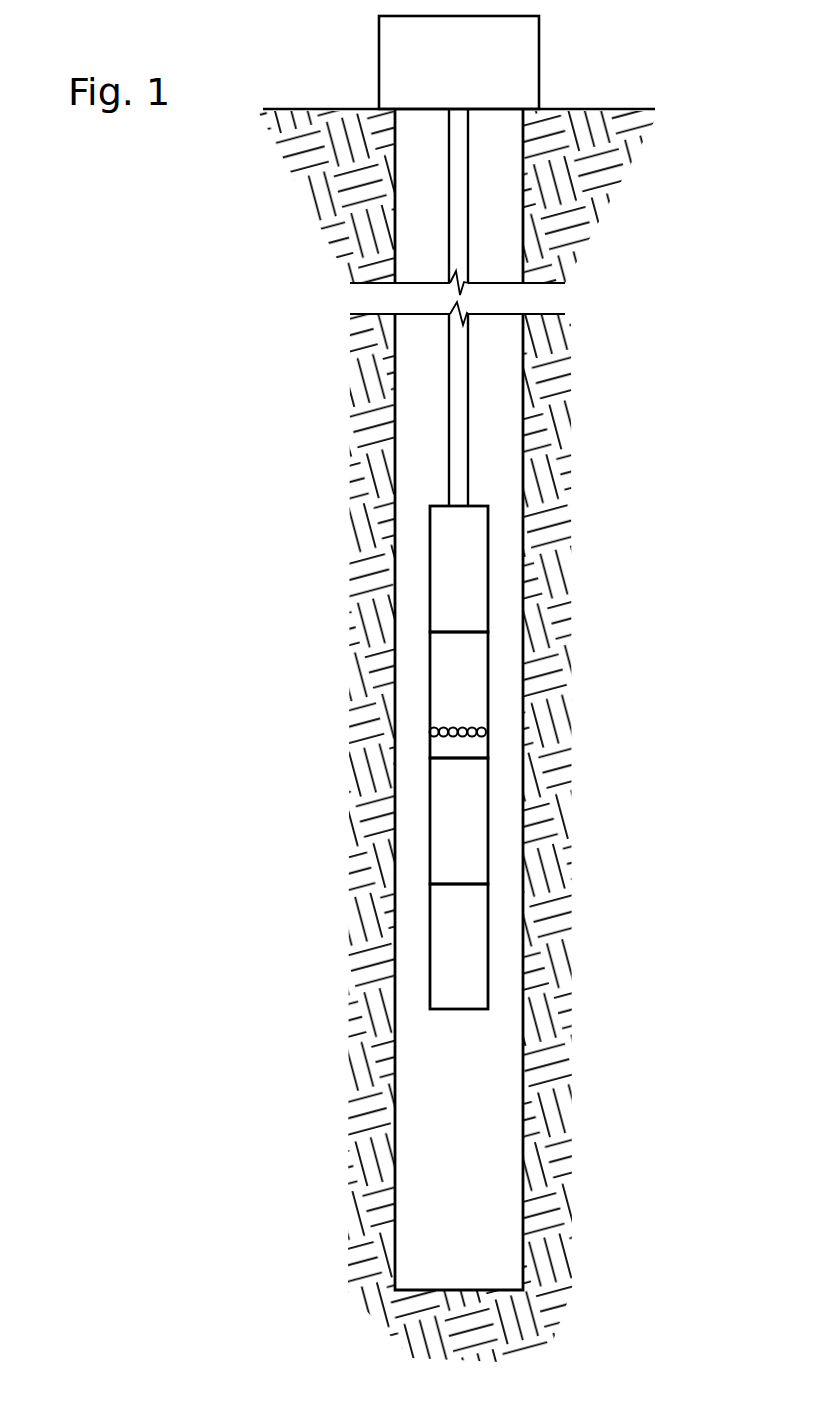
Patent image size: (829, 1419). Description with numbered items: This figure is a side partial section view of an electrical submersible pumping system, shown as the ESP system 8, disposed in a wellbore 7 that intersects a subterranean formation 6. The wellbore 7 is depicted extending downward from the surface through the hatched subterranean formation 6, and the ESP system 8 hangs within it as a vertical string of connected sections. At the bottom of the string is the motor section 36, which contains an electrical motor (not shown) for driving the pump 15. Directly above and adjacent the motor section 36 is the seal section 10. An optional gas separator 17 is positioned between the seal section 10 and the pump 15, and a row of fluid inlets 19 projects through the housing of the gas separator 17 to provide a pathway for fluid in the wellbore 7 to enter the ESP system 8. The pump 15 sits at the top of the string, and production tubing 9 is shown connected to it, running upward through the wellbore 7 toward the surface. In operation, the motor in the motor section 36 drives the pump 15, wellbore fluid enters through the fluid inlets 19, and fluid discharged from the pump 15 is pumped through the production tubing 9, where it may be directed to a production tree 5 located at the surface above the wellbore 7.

The production tree 5 is at (450, 72).
The subterranean formation 6 is at (311, 127).
The wellbore 7 is at (393, 237).
The ESP system 8 is at (494, 411).
The production tubing 9 is at (449, 389).
The pump 15 is at (446, 586).
The gas separator 17 is at (446, 708).
The fluid inlets 19 is at (433, 728).
The seal section 10 is at (446, 836).
The motor section 36 is at (446, 961).